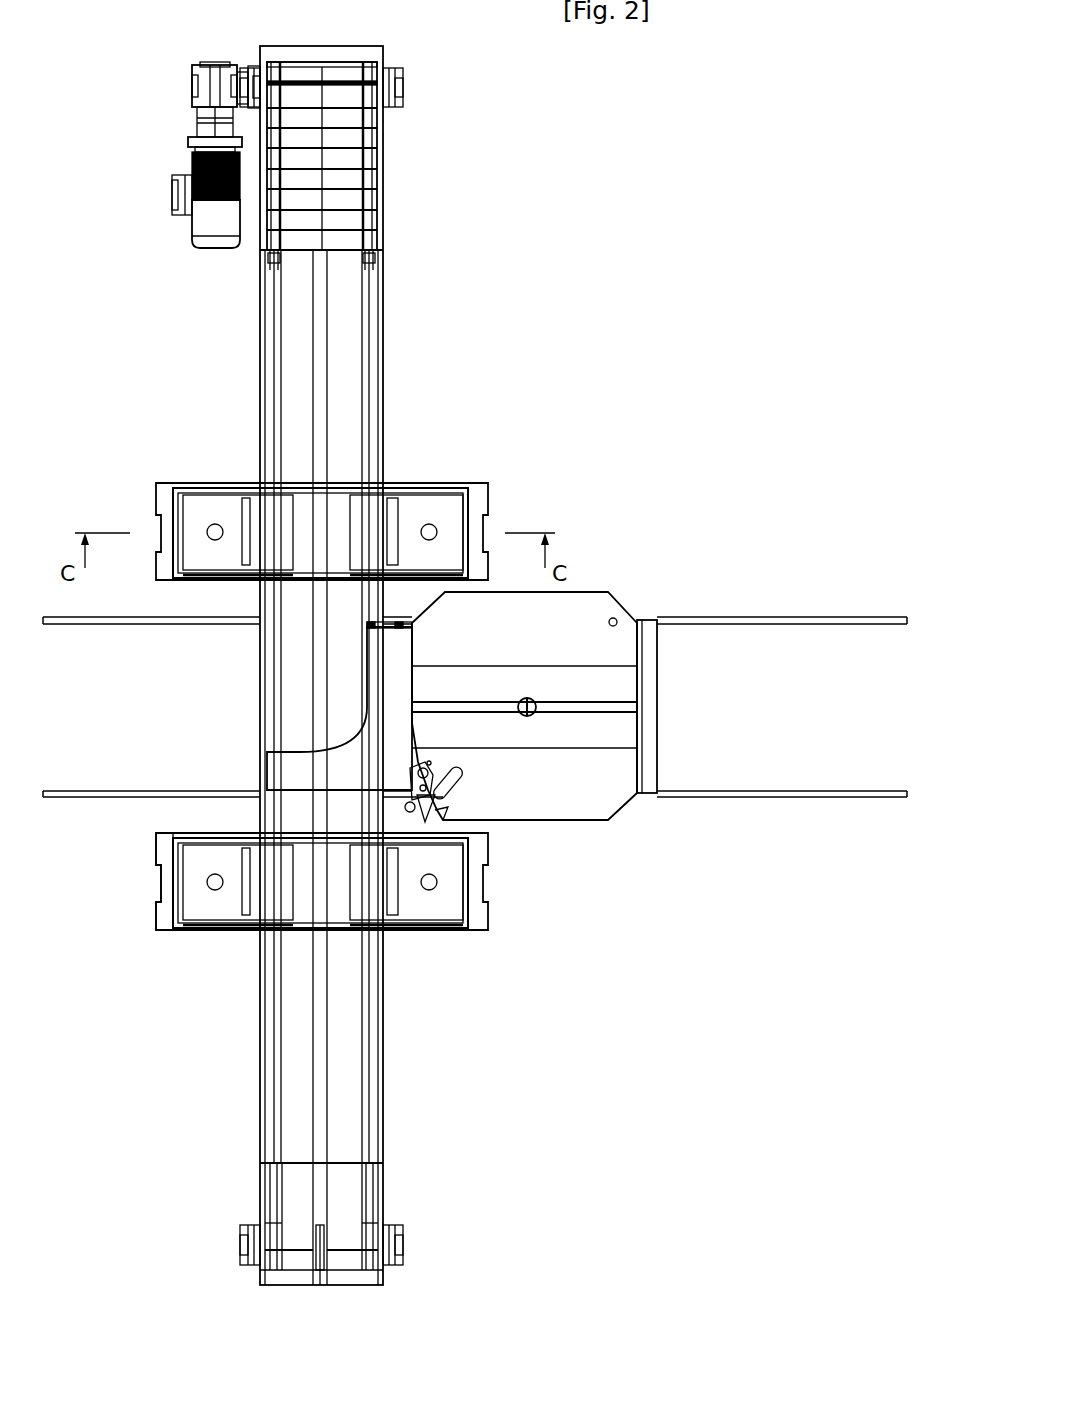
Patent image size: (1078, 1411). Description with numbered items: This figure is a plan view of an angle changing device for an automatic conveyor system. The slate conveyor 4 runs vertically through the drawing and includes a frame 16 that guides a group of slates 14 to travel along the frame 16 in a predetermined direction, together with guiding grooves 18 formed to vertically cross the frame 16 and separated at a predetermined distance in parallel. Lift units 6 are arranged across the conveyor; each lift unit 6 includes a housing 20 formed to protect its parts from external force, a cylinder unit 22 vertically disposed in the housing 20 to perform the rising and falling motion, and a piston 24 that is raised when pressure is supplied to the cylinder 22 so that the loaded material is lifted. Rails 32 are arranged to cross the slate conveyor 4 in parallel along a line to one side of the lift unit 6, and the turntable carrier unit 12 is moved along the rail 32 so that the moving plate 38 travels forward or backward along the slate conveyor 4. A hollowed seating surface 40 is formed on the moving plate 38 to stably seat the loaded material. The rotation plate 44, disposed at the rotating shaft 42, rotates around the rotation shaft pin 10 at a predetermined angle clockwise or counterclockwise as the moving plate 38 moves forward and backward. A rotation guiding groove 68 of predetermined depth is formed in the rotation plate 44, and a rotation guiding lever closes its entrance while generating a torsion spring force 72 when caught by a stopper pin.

The slate conveyor 4 is at (396, 260).
The lift unit 6 is at (133, 941).
The rotation shaft pin 10 is at (410, 830).
The turntable carrier unit 12 is at (655, 827).
The slates 14 is at (372, 137).
The frame 16 is at (297, 727).
The guiding grooves 18 is at (266, 648).
The housing 20 is at (165, 887).
The cylinder unit 22 is at (218, 917).
The piston 24 is at (207, 877).
The rails 32 is at (82, 790).
The moving plate 38 is at (657, 660).
The seating surface 40 is at (610, 740).
The rotating shaft 42 is at (536, 716).
The rotation plate 44 is at (589, 590).
The rotation guiding groove 68 is at (458, 822).
The torsion spring force 72 is at (407, 818).